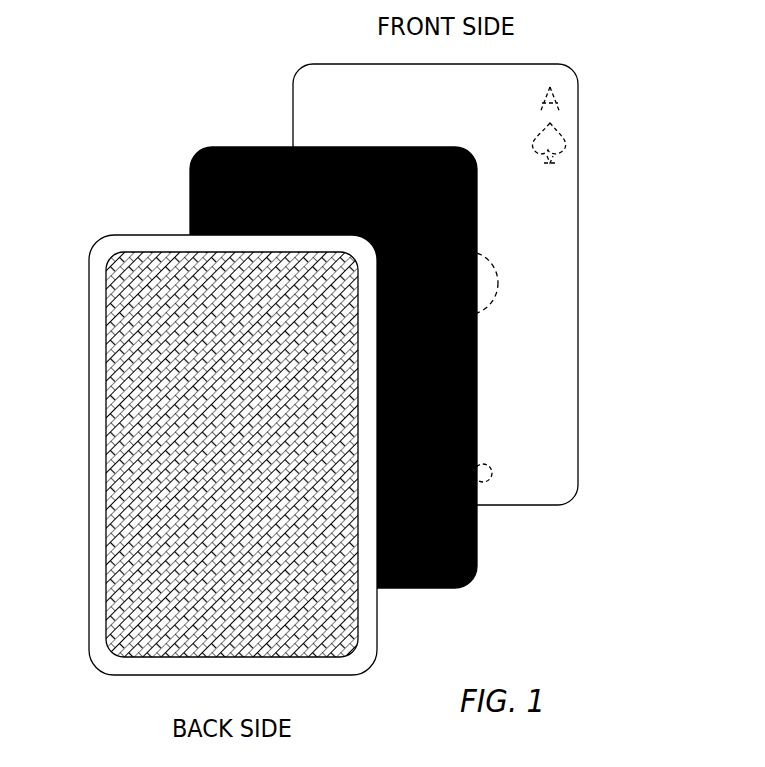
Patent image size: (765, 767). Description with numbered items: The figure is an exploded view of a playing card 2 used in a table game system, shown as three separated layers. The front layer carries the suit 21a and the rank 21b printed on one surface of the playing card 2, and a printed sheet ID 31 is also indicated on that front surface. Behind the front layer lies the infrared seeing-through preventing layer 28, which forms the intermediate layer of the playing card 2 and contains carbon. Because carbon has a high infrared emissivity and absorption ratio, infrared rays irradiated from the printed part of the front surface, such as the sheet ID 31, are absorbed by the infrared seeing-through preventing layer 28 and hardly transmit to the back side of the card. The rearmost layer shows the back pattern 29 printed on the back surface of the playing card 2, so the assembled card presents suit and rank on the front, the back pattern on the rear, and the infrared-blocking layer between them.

The playing card 2 is at (78, 69).
The suit 21a is at (490, 272).
The rank 21b is at (565, 101).
The infrared seeing-through preventing layer 28 is at (478, 546).
The back pattern 29 is at (118, 440).
The sheet ID 31 is at (493, 474).